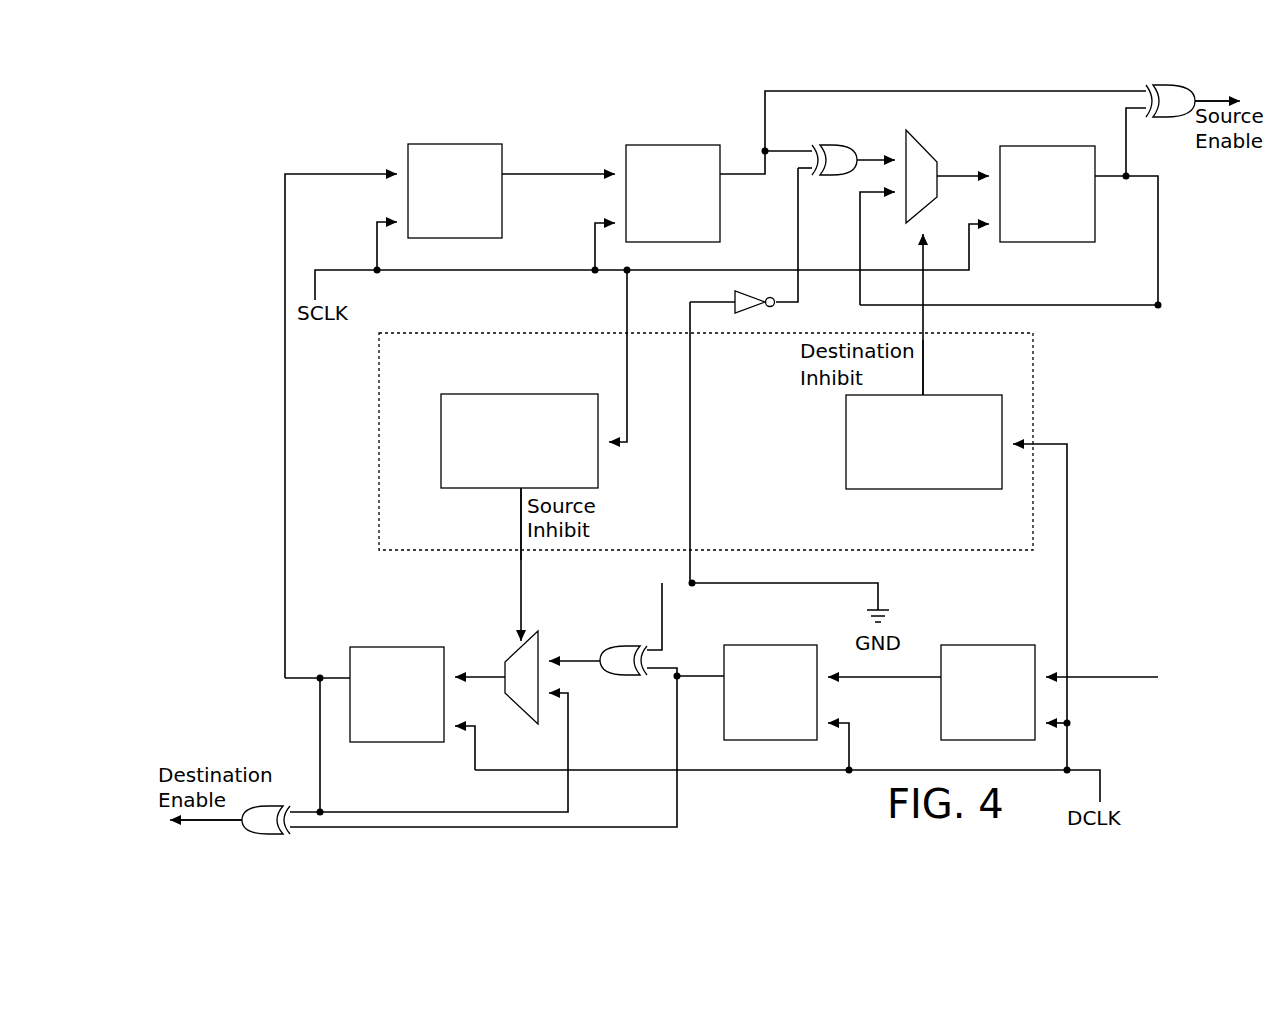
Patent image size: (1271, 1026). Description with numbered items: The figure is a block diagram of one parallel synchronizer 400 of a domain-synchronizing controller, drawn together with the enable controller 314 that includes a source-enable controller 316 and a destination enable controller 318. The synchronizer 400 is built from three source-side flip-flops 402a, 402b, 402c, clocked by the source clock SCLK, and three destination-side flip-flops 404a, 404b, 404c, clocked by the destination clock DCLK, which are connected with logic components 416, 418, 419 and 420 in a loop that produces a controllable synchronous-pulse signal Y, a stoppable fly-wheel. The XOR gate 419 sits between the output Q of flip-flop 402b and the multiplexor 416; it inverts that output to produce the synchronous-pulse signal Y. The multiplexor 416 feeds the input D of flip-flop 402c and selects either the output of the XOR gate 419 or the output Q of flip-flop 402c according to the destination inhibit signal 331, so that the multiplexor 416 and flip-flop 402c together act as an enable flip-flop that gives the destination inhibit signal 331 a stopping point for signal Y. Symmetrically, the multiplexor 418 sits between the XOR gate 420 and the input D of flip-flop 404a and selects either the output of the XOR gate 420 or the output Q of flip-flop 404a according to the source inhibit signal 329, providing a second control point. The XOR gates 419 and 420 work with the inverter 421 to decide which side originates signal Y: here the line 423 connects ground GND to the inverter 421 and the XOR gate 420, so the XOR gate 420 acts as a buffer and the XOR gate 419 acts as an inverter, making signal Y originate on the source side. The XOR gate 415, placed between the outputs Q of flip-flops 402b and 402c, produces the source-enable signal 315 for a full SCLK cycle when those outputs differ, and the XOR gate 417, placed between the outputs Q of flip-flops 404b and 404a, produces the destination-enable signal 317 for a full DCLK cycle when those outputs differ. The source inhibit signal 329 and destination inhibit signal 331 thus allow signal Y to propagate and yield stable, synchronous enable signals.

The parallel synchronizer 400 is at (229, 672).
The flip-flop 402a is at (502, 219).
The flip-flop 402b is at (720, 220).
The flip-flop 402c is at (1023, 146).
The flip-flop 404a is at (396, 647).
The flip-flop 404b is at (778, 645).
The flip-flop 404c is at (980, 645).
The logic component 415 is at (1170, 85).
The logic component 416 is at (924, 151).
The logic component 417 is at (256, 834).
The logic component 418 is at (510, 704).
The logic component 419 is at (832, 145).
The logic component 420 is at (622, 645).
The inverter 421 is at (735, 291).
The line 423 is at (881, 592).
The enable controller 314 is at (1033, 373).
The source-enable signal 315 is at (1237, 96).
The source-enable controller 316 is at (530, 394).
The destination-enable signal 317 is at (190, 822).
The destination enable controller 318 is at (846, 424).
The source inhibit signal 329 is at (521, 530).
The destination inhibit signal 331 is at (923, 366).
The synchronous-pulse signal Y is at (287, 368).